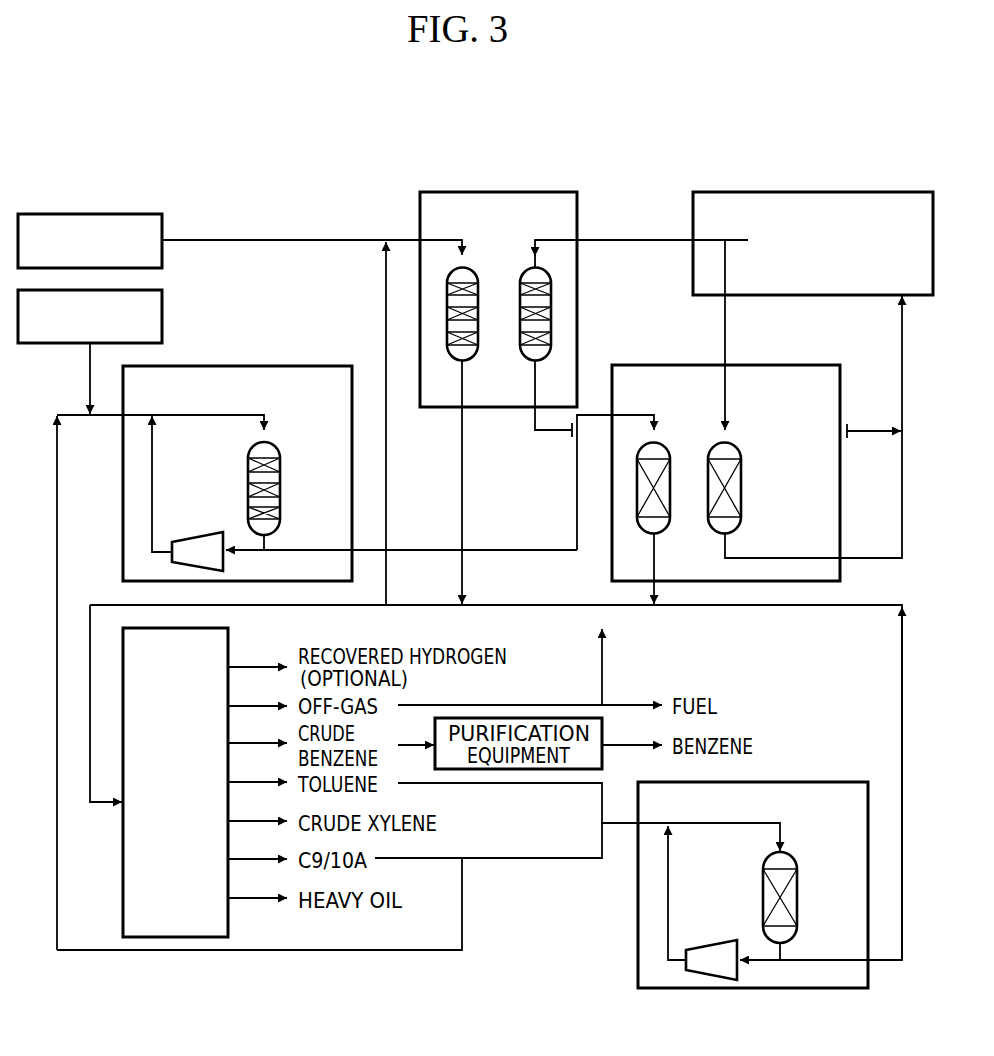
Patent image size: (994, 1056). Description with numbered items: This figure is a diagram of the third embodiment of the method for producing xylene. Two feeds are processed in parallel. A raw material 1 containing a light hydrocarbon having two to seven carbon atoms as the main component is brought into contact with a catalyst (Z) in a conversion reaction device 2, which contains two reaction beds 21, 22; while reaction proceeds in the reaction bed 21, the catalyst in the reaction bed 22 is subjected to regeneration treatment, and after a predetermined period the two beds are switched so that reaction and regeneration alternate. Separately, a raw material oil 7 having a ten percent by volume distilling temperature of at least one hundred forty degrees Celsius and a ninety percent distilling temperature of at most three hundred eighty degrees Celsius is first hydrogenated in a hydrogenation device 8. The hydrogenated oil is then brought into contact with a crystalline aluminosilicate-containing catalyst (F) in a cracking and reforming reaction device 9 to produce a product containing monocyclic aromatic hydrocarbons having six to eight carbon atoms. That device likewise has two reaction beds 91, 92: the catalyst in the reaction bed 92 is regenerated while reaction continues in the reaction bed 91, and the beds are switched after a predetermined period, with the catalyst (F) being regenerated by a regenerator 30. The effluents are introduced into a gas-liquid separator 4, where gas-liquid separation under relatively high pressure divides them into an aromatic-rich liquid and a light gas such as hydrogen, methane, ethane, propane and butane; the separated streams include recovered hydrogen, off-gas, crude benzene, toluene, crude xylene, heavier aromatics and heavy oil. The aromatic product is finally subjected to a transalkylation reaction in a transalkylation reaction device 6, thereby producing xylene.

The raw material containing a light hydrocarbon 1 is at (118, 214).
The raw material oil 7 is at (162, 315).
The hydrogenation device 8 is at (292, 366).
The conversion reaction device 2 is at (545, 192).
The reaction bed 21 is at (478, 296).
The reaction bed 22 is at (520, 338).
The regenerator 30 is at (875, 192).
The cracking and reforming reaction device 9 is at (775, 365).
The reaction bed 91 is at (670, 468).
The reaction bed 92 is at (741, 468).
The gas-liquid separator 4 is at (228, 637).
The transalkylation reaction device 6 is at (822, 782).